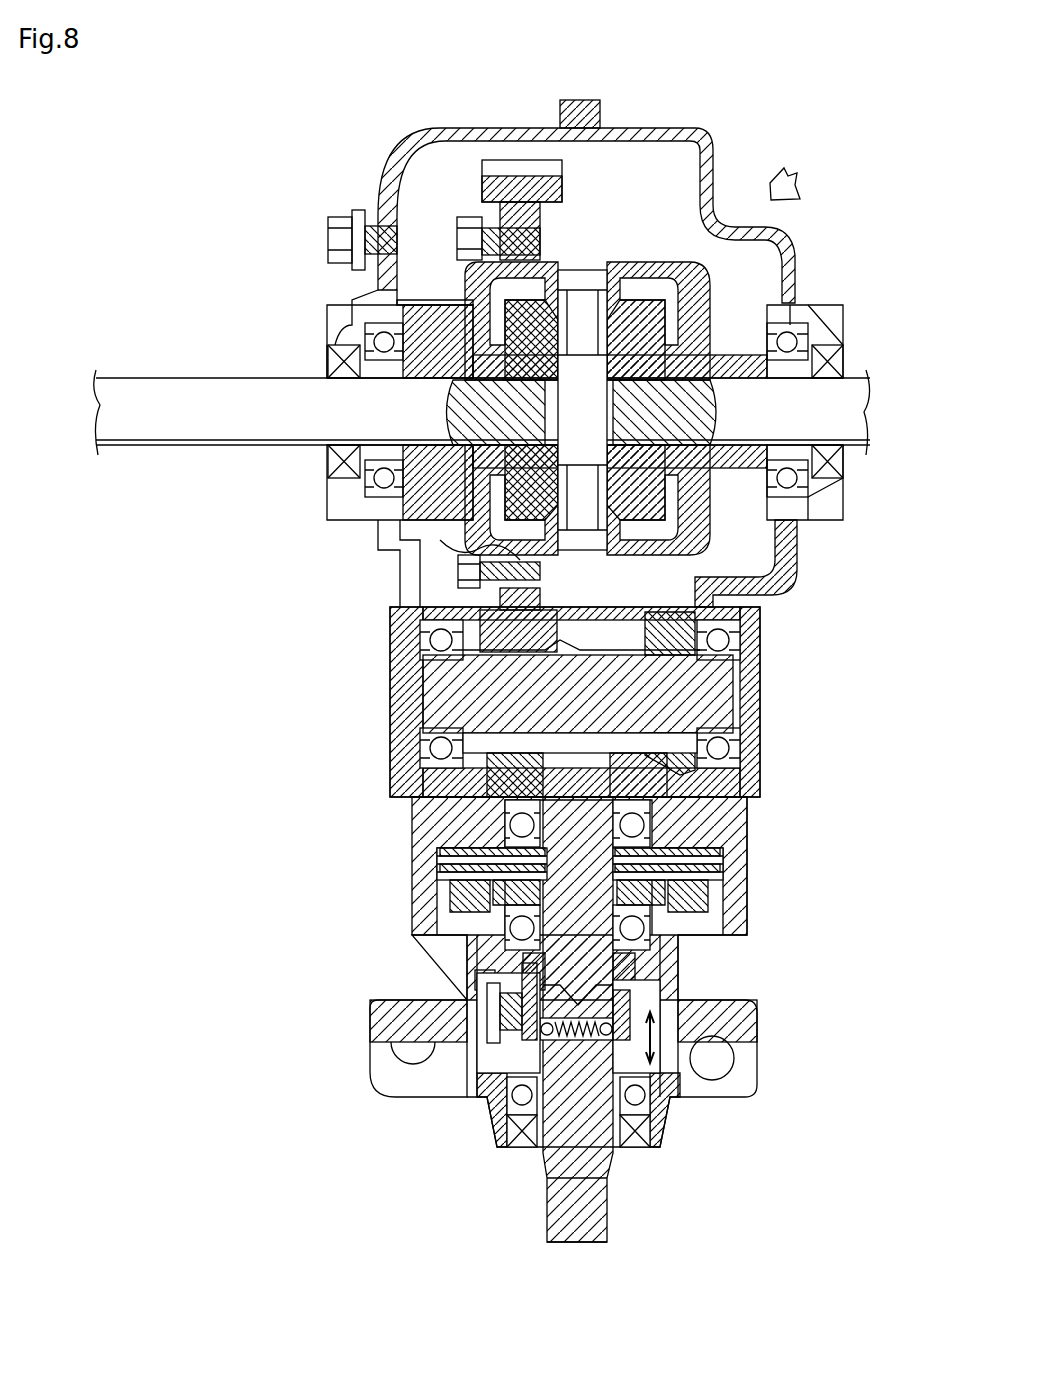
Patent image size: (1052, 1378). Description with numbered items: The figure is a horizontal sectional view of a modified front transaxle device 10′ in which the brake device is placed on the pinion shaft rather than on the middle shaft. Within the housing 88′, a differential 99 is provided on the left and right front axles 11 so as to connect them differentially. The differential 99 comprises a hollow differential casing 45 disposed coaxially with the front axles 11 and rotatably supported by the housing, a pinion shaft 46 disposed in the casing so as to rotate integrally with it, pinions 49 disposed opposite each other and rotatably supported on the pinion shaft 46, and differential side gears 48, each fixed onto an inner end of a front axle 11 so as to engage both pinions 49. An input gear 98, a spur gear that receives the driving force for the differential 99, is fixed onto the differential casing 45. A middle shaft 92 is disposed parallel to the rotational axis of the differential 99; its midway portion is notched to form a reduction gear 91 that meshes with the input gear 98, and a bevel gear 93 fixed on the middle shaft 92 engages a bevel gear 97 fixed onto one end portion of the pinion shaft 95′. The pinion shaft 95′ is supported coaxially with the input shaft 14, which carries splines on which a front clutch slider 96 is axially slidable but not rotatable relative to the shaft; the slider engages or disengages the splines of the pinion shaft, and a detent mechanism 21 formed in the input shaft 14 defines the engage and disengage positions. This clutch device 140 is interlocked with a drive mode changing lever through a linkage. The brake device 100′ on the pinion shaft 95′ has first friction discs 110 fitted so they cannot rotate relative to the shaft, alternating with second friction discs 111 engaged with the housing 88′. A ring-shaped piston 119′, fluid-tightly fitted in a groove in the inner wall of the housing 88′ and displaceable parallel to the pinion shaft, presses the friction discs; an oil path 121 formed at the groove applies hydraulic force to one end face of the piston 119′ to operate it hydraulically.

The housing 88′ is at (398, 170).
The front transaxle device 10′ is at (789, 169).
The input gear 98 is at (482, 182).
The differential 99 is at (627, 233).
The pinions 49 is at (650, 282).
The differential casing 45 is at (700, 300).
The differential side gears 48 is at (500, 330).
The front axles 11 is at (230, 392).
The pinion shaft 46 is at (590, 430).
The bevel gear 93 is at (648, 620).
The reduction gear 91 is at (575, 652).
The middle shaft 92 is at (745, 692).
The bevel gear 97 is at (705, 790).
The pinion shaft 95′ is at (578, 1019).
The second friction discs 111 is at (725, 866).
The brake device 100′ is at (790, 896).
The first friction discs 110 is at (440, 866).
The piston 119′ is at (450, 905).
The oil path 121 is at (465, 958).
The clutch device 140 is at (663, 1015).
The detent mechanism 21 is at (580, 1055).
The front clutch slider 96 is at (495, 1080).
The input shaft 14 is at (600, 1208).